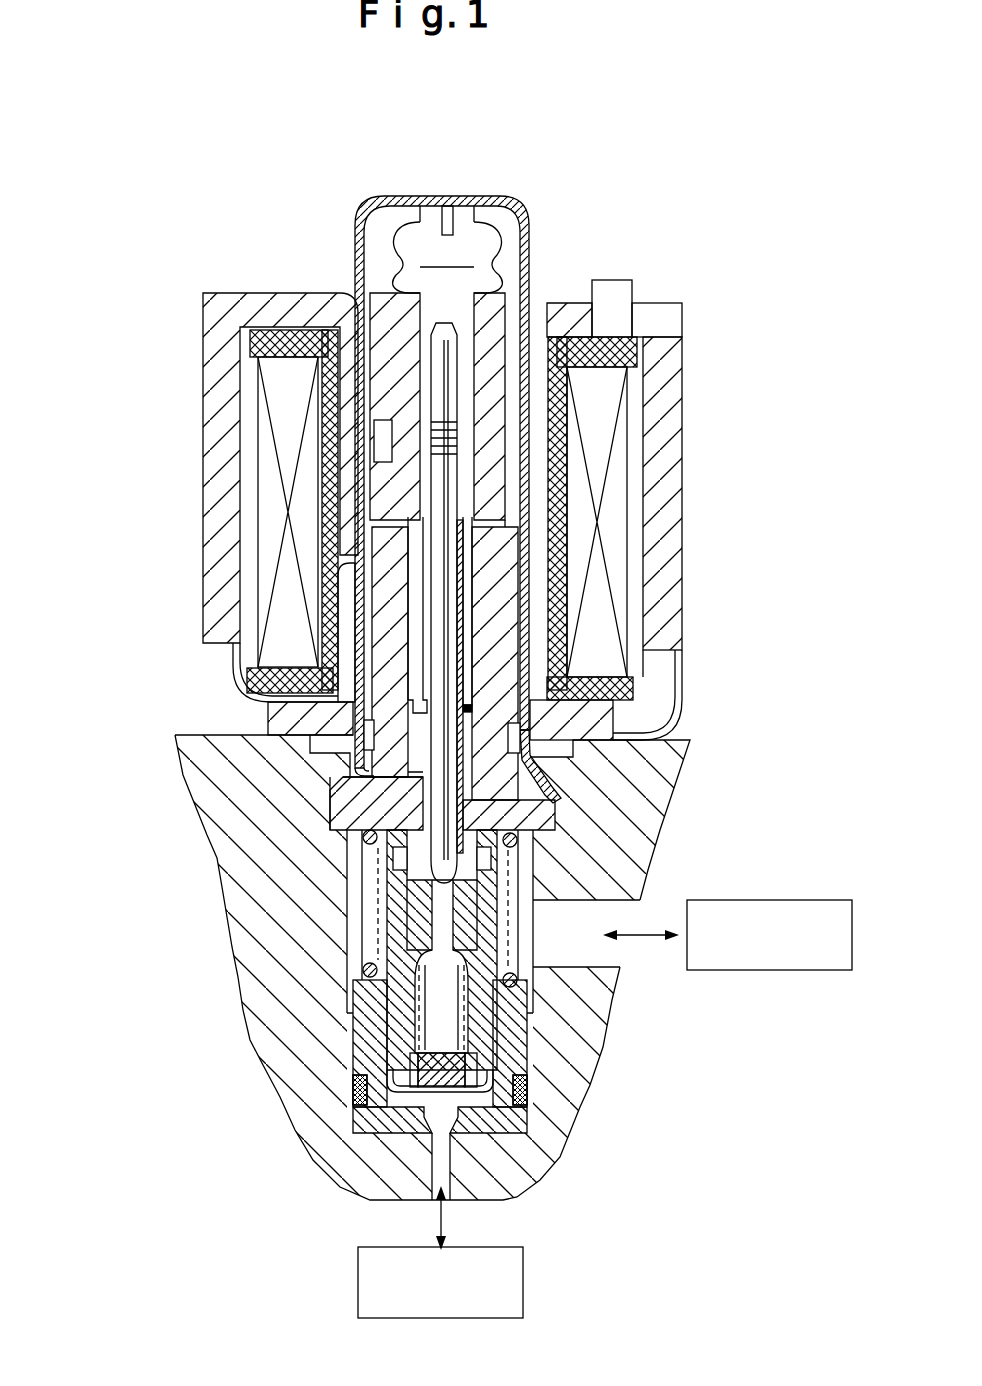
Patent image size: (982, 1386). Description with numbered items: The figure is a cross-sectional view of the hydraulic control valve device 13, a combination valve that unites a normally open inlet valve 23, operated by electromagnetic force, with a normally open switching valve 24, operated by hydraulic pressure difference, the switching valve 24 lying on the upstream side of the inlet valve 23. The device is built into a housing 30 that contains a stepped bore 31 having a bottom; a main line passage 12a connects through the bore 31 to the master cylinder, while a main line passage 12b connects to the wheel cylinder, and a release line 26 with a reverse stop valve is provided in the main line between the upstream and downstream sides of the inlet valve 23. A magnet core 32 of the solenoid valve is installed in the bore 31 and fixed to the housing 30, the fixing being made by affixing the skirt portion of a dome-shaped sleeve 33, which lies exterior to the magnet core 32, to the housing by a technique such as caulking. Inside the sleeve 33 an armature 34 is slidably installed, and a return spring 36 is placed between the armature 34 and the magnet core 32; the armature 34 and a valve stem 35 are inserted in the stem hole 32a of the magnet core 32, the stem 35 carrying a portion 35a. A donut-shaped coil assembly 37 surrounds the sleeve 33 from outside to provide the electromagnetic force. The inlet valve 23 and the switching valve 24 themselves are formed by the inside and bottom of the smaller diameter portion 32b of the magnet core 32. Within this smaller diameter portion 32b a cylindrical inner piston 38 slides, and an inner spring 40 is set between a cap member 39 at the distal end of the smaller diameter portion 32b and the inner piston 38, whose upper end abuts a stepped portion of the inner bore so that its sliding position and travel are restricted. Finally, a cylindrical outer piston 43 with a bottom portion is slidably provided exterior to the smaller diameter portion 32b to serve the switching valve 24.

The hydraulic control valve device 13 is at (134, 594).
The housing 30 is at (680, 743).
The coil assembly 37 is at (672, 452).
The sleeve 33 is at (515, 197).
The armature 34 is at (498, 295).
The valve stem 35 is at (435, 497).
The plunger sleeve 35a is at (445, 835).
The return spring 36 is at (415, 547).
The magnet core 32 is at (523, 802).
The stem hole 32a is at (420, 777).
The smaller diameter portion 32b is at (410, 918).
The inlet valve 23 is at (424, 888).
The inner piston 38 is at (392, 945).
The inner spring 40 is at (441, 1007).
The stepped bore 31 is at (353, 853).
The release line 26 is at (480, 895).
The switching valve 24 is at (405, 1094).
The outer piston 43 is at (395, 1073).
The cap member 39 is at (463, 1093).
The main line passage 12a is at (440, 1160).
The main line passage 12b is at (620, 912).